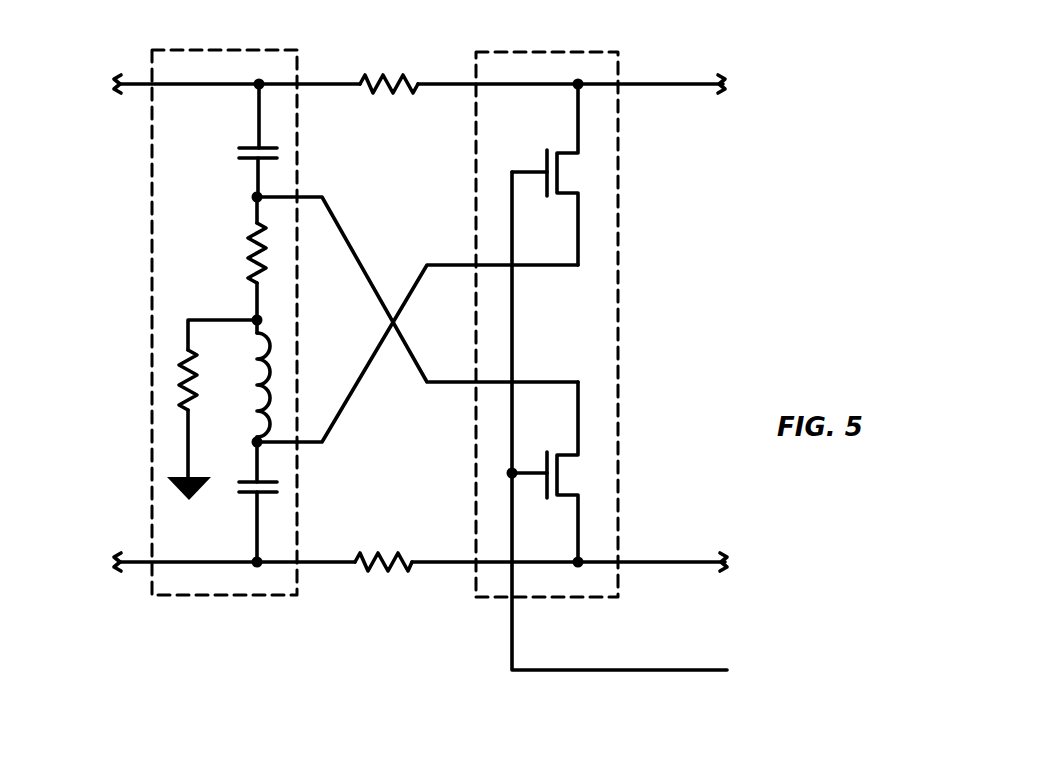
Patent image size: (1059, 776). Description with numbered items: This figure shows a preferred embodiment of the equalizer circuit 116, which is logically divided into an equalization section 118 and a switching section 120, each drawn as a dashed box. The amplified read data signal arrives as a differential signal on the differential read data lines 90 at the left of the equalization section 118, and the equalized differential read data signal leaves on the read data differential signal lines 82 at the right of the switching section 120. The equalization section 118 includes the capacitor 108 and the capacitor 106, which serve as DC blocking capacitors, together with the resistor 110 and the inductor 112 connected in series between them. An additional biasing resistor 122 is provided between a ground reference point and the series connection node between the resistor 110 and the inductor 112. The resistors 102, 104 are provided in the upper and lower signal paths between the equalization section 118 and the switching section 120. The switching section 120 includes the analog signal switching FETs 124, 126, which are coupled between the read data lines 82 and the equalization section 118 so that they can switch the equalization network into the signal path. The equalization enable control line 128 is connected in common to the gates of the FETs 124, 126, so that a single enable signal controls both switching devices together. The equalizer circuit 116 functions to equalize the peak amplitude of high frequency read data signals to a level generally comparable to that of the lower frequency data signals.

The read data differential signal lines 82 is at (657, 86).
The differential read data lines 90 is at (133, 597).
The resistor 102 is at (412, 80).
The resistor 104 is at (398, 567).
The capacitor C1 106 is at (282, 492).
The capacitor C2 108 is at (283, 155).
The resistor R1 110 is at (264, 257).
The inductor L1 112 is at (267, 373).
The equalizer circuit 116 is at (770, 258).
The equalization section 118 is at (233, 596).
The switching section 120 is at (597, 598).
The biasing resistor 122 is at (183, 387).
The analog signal switching FET 124 is at (567, 170).
The analog signal switching FET 126 is at (567, 470).
The equalization enable control line 128 is at (607, 672).